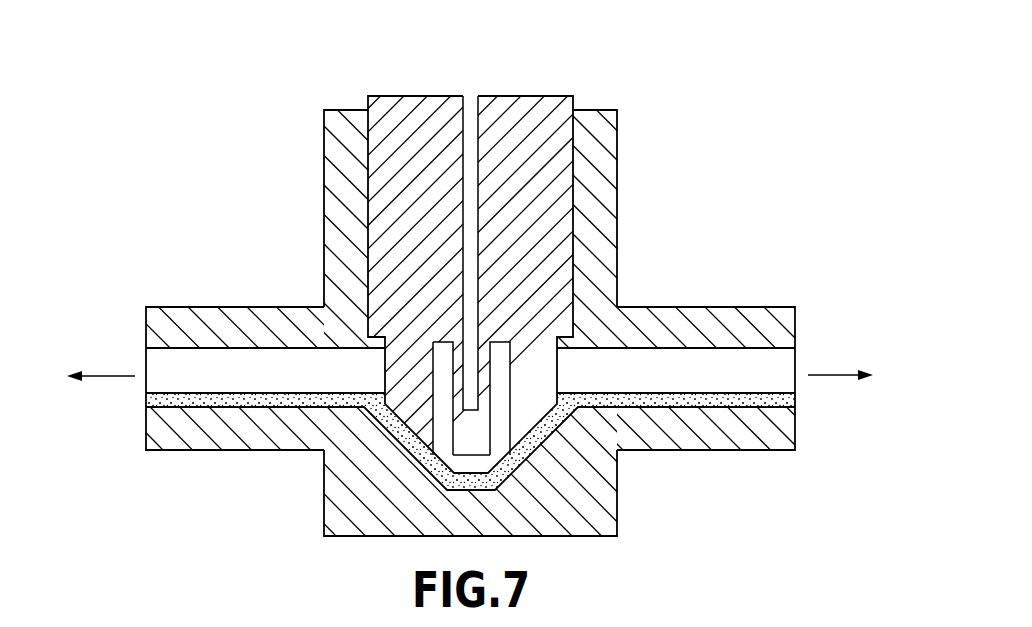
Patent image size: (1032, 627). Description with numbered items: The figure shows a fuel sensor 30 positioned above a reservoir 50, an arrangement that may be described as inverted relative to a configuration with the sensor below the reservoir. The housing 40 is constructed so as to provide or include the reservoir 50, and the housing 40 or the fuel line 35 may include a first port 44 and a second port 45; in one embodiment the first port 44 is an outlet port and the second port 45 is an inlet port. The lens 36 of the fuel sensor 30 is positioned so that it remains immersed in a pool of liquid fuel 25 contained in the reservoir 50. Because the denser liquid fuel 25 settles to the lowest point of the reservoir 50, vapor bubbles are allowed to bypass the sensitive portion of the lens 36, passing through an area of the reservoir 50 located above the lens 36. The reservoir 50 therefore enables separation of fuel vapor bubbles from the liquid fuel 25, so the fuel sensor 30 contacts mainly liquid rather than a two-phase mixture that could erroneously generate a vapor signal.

The liquid fuel 25 is at (643, 393).
The fuel sensor 30 is at (540, 96).
The fuel line 35 is at (470, 376).
The lens 36 is at (518, 473).
The housing 40 is at (323, 147).
The first port 44 is at (172, 450).
The second port 45 is at (773, 450).
The reservoir 50 is at (430, 481).